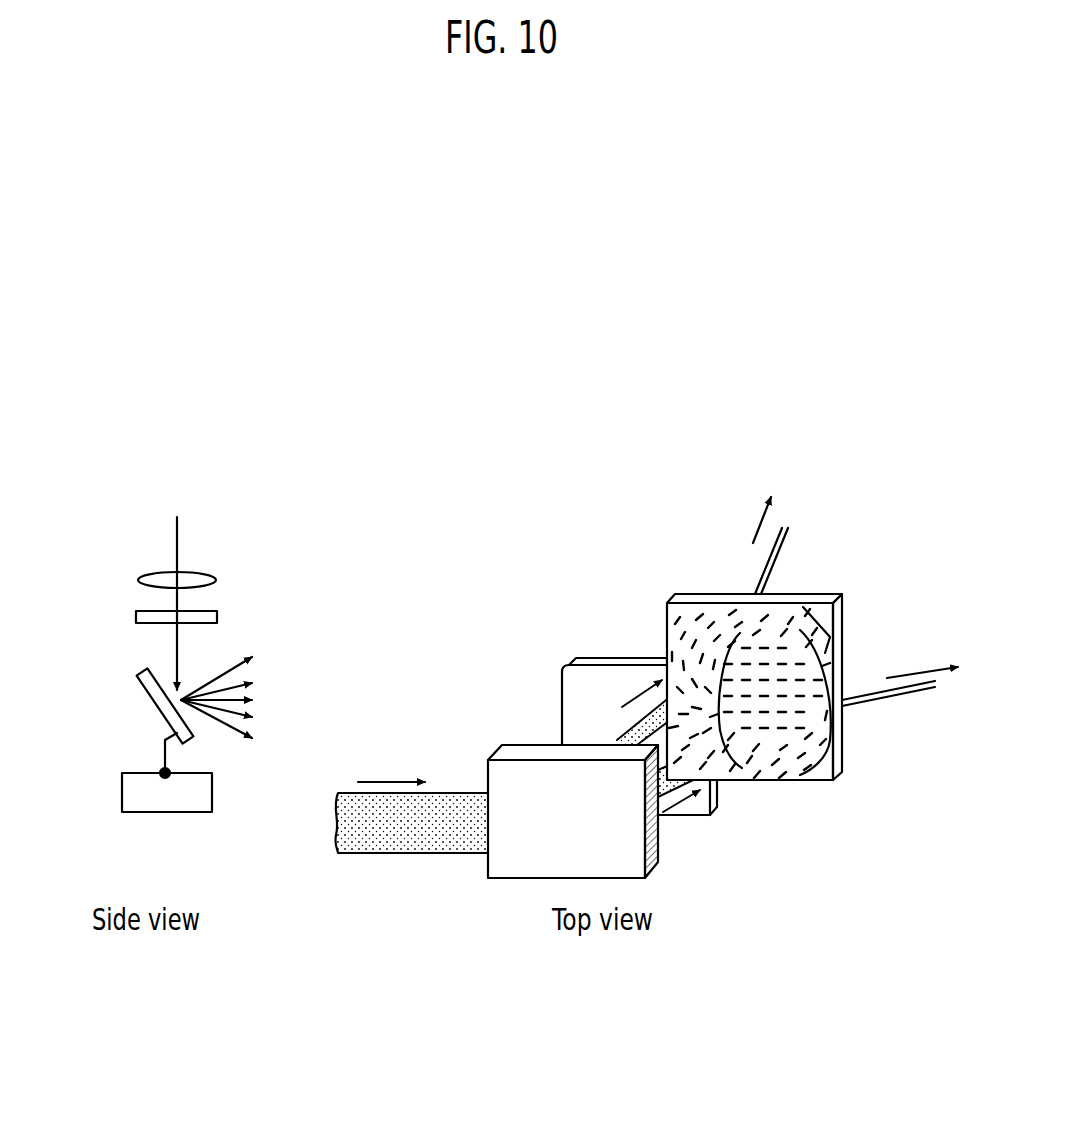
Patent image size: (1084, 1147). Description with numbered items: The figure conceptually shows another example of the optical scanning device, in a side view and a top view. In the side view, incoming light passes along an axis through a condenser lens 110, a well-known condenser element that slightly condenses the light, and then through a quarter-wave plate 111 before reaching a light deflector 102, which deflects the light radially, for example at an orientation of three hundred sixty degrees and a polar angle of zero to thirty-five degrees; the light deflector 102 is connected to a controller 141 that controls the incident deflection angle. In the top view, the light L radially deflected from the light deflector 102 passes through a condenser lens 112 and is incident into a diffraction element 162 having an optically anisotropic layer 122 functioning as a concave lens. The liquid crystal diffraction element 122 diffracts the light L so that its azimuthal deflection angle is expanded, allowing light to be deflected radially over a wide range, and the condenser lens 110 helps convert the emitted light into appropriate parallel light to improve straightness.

The condenser lens 110 is at (192, 577).
The λ/4 plate 111 is at (136, 615).
The light deflector 102 is at (118, 680).
The controller 141 is at (127, 793).
The condenser lens 112 is at (568, 660).
The diffraction element 162 is at (860, 554).
The optically anisotropic layer 122 is at (812, 631).
The light L is at (417, 856).